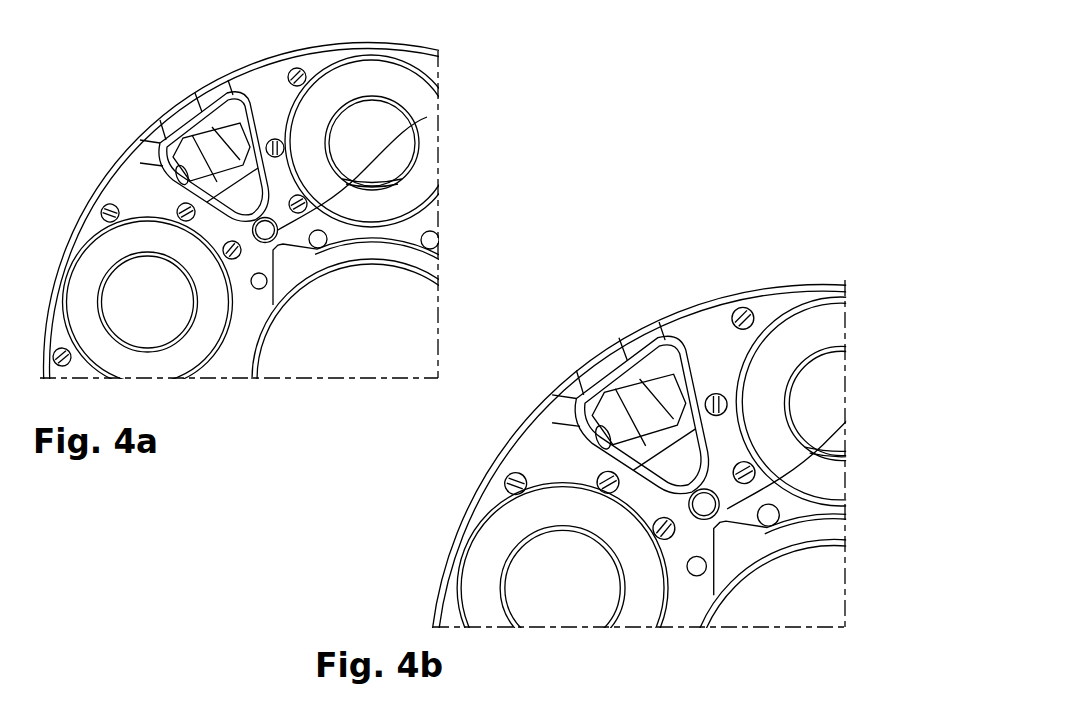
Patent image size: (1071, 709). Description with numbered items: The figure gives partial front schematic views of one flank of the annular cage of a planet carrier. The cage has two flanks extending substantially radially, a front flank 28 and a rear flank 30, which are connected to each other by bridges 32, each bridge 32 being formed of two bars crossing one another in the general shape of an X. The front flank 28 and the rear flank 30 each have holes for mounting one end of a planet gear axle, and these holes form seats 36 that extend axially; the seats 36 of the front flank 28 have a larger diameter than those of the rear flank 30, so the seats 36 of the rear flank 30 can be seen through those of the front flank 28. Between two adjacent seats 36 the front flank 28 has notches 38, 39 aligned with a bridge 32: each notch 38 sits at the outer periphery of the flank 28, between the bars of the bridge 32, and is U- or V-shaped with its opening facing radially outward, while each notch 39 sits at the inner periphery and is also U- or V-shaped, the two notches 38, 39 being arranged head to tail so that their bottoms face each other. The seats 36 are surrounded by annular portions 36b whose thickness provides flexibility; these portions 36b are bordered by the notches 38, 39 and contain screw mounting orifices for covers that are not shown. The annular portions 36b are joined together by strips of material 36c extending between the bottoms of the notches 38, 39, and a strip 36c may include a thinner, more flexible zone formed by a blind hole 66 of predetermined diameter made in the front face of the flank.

In FIG. 4A, the front flank 28 is at (253, 100).
In FIG. 4B, the front flank 28 is at (708, 330).
In FIG. 4A, the rear flank 30 is at (255, 337).
In FIG. 4B, the rear flank 30 is at (805, 537).
In FIG. 4A, the bridge 32 is at (197, 90).
In FIG. 4A, the seat 36 is at (366, 58).
In FIG. 4B, the seat 36 is at (847, 378).
In FIG. 4A, the annular portion 36b is at (280, 103).
In FIG. 4B, the strip of material 36c is at (702, 517).
In FIG. 4A, the notch 38 is at (182, 172).
In FIG. 4A, the notch 39 is at (293, 258).
In FIG. 4B, the blind hole 66 is at (818, 453).